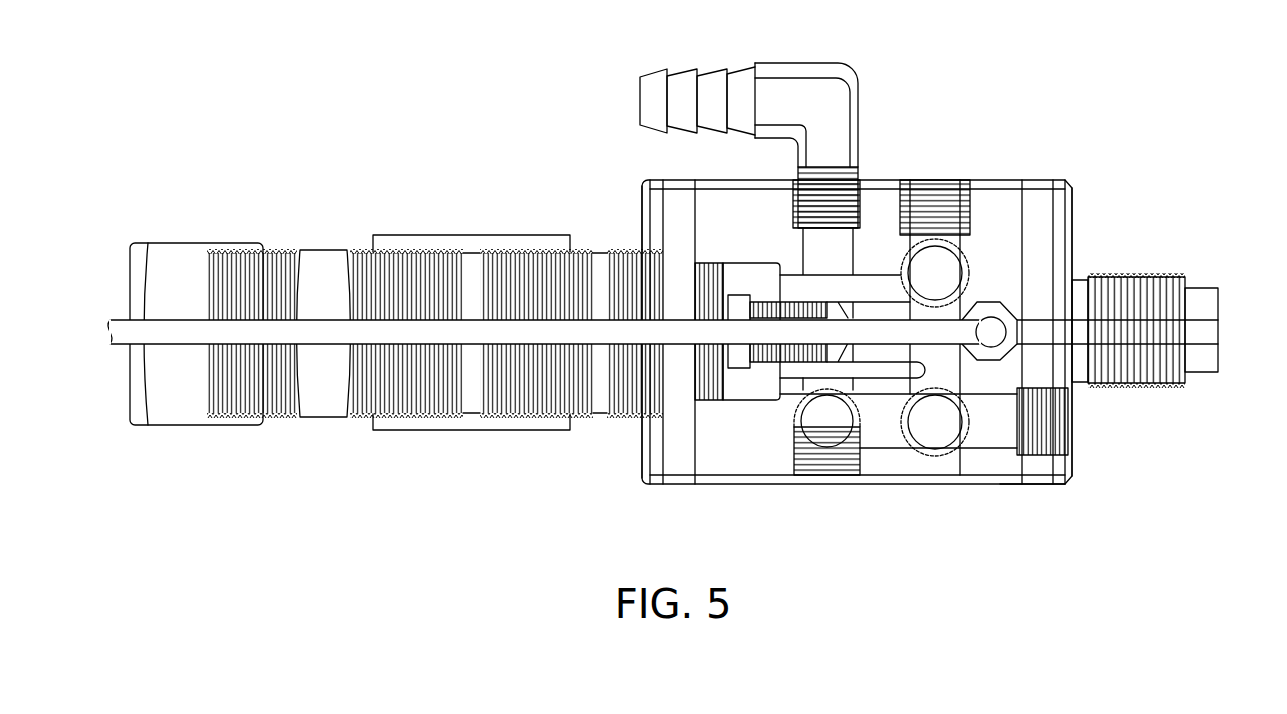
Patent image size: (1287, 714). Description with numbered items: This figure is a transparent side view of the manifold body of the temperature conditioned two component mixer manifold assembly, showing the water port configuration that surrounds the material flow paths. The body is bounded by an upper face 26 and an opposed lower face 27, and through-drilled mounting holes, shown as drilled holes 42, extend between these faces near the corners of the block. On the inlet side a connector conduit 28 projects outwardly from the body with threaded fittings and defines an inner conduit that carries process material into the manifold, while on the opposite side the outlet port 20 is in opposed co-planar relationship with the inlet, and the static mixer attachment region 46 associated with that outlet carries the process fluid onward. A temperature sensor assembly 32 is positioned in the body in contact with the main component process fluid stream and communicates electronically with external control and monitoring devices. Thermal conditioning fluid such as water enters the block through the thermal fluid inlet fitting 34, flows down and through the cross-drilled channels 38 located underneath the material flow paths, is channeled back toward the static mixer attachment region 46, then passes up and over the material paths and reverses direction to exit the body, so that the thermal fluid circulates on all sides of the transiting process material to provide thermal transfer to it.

The outlet port 20 is at (1207, 302).
The upper face 26 is at (980, 178).
The lower face 27 is at (1035, 484).
The connector conduit 28 is at (189, 243).
The temperature sensor assembly 32 is at (982, 328).
The thermal fluid inlet fitting 34 is at (681, 73).
The cross-drilled channels 38 is at (862, 180).
The drilled holes 42 is at (677, 180).
The static mixer attachment region 46 is at (1143, 278).